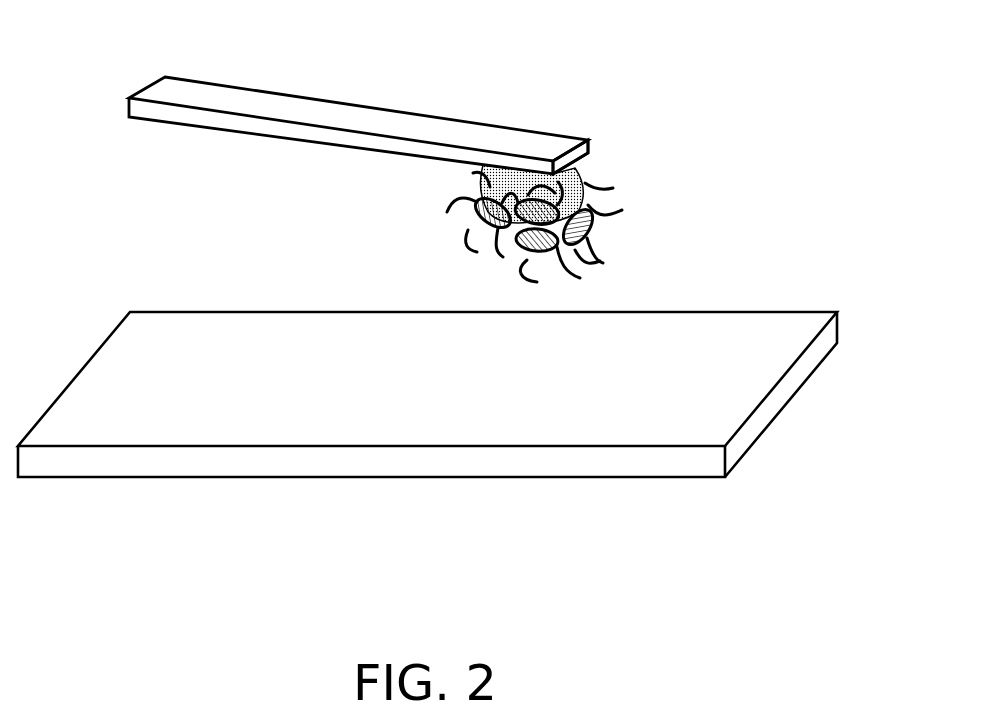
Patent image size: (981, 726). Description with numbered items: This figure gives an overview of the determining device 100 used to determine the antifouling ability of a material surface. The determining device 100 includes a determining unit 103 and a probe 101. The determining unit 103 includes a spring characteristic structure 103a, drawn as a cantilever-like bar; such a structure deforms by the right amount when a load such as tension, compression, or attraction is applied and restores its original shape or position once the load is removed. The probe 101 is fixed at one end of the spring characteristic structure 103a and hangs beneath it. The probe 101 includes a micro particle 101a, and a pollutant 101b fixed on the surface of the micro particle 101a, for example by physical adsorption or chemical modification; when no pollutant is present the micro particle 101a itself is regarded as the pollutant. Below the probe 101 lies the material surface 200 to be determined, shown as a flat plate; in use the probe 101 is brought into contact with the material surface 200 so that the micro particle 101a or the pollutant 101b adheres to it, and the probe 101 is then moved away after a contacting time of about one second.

The determining device 100 is at (95, 75).
The determining unit 103 is at (358, 111).
The spring characteristic structure 103a is at (580, 152).
The probe 101 is at (445, 165).
The micro particle 101a is at (575, 173).
The pollutant 101b is at (597, 227).
The material surface 200 is at (647, 463).